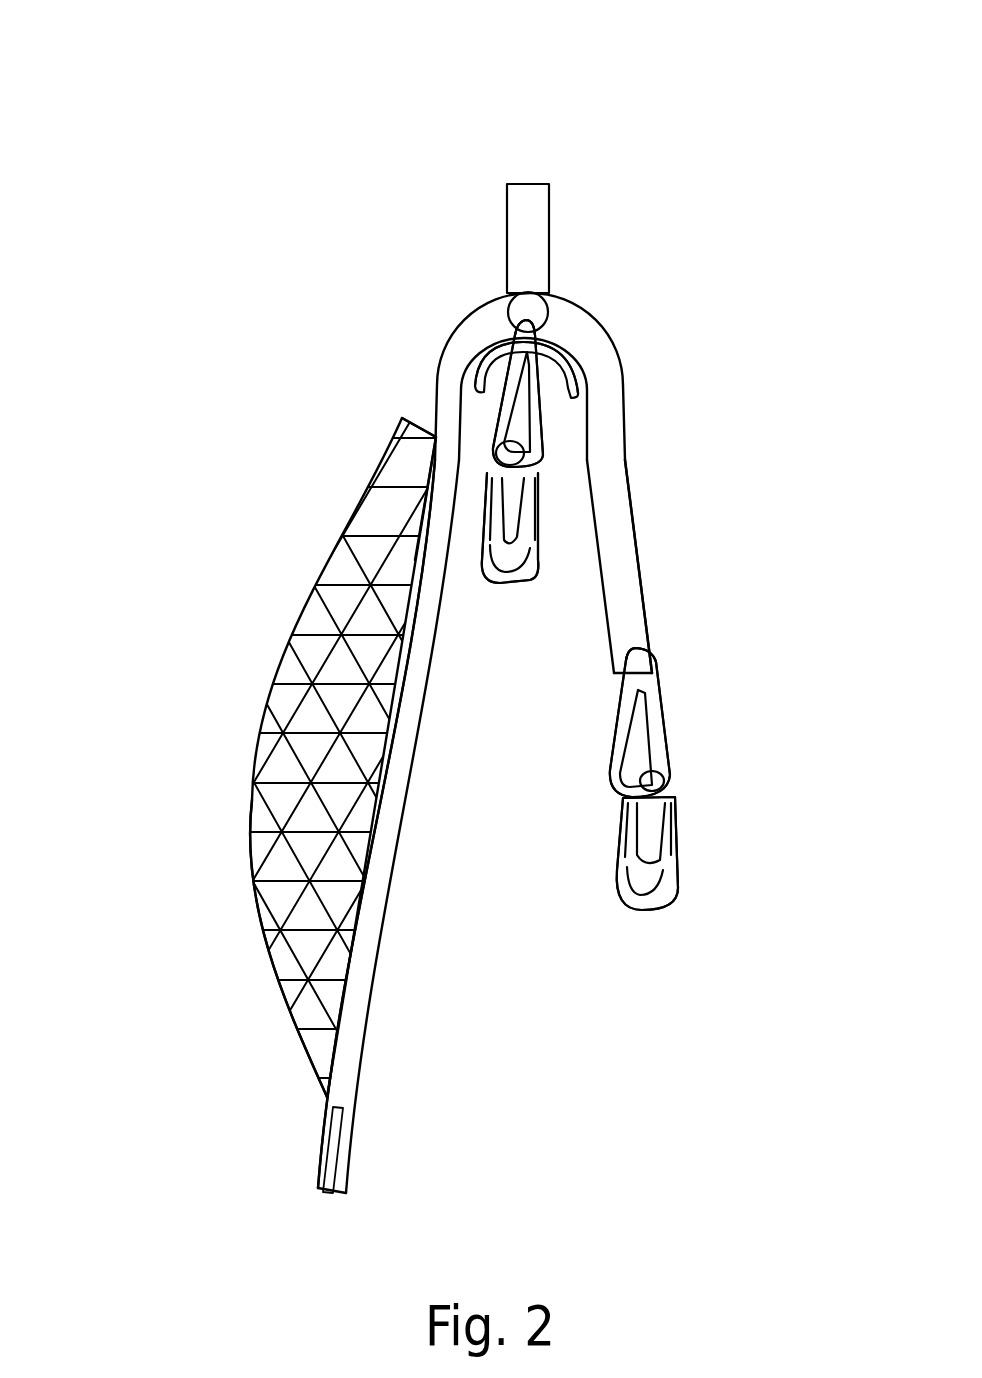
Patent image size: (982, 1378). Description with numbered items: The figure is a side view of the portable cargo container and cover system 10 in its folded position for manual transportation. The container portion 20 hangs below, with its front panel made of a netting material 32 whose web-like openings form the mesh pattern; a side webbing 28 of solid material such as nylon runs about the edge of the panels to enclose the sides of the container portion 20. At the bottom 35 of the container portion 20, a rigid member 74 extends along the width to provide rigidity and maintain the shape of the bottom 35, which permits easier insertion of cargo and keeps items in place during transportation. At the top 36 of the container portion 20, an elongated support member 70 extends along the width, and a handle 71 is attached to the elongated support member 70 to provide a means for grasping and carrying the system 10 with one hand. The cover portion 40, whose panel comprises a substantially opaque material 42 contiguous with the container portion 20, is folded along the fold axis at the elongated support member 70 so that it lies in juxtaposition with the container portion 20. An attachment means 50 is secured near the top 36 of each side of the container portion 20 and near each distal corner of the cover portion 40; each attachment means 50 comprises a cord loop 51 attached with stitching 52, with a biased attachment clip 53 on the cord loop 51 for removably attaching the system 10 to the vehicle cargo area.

The portable cargo container and cover system 10 is at (310, 113).
The container portion 20 is at (232, 753).
The side webbing 28 is at (380, 869).
The netting material 32 is at (382, 555).
The bottom 35 is at (264, 1086).
The top 36 is at (331, 388).
The cover portion 40 is at (676, 560).
The substantially opaque material 42 is at (628, 482).
The attachment means 50 is at (564, 534).
The cord loop 51 is at (548, 440).
The stitching 52 is at (500, 347).
The lower hook 53 is at (518, 583).
The elongated support member 70 is at (526, 303).
The handle 71 is at (532, 200).
The rigid member 74 is at (336, 1137).